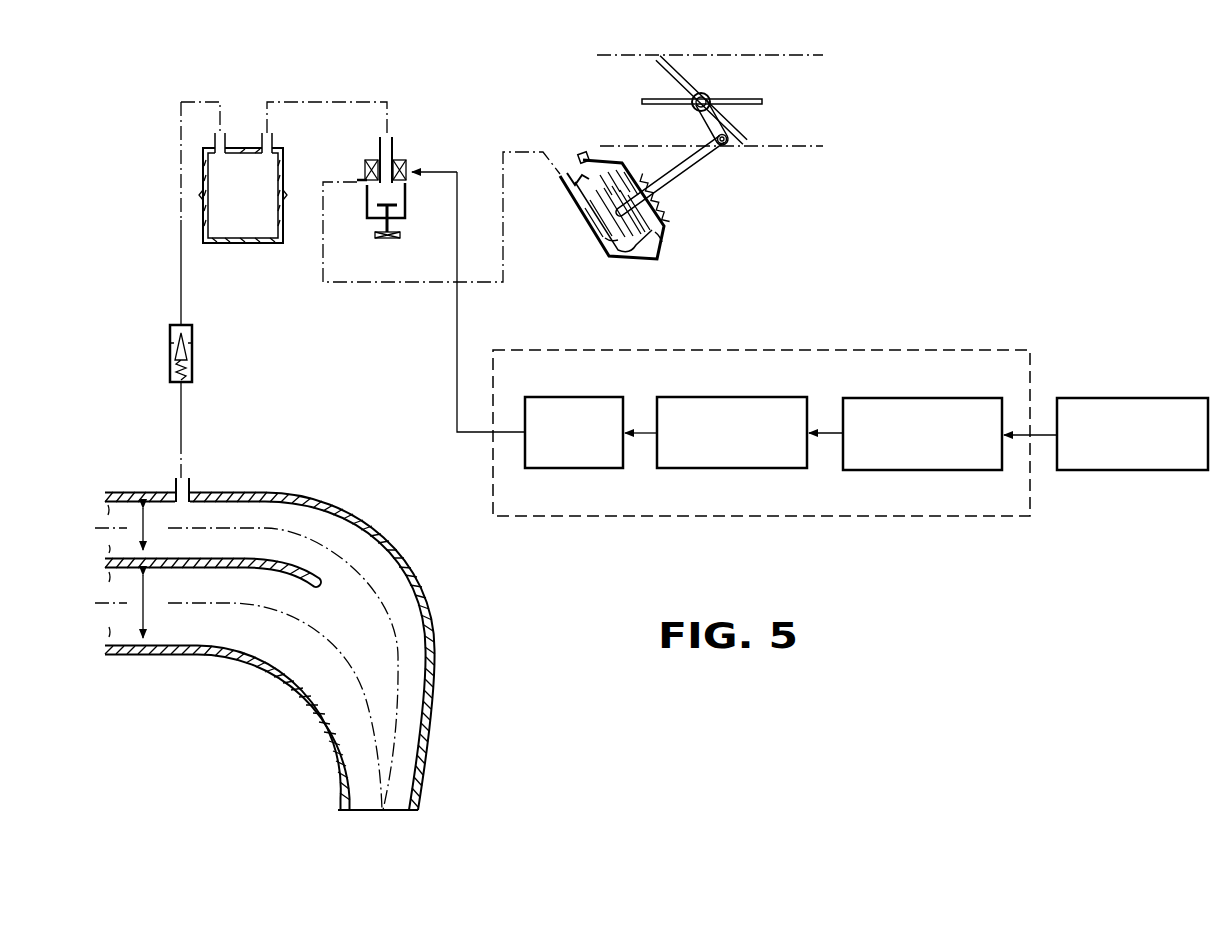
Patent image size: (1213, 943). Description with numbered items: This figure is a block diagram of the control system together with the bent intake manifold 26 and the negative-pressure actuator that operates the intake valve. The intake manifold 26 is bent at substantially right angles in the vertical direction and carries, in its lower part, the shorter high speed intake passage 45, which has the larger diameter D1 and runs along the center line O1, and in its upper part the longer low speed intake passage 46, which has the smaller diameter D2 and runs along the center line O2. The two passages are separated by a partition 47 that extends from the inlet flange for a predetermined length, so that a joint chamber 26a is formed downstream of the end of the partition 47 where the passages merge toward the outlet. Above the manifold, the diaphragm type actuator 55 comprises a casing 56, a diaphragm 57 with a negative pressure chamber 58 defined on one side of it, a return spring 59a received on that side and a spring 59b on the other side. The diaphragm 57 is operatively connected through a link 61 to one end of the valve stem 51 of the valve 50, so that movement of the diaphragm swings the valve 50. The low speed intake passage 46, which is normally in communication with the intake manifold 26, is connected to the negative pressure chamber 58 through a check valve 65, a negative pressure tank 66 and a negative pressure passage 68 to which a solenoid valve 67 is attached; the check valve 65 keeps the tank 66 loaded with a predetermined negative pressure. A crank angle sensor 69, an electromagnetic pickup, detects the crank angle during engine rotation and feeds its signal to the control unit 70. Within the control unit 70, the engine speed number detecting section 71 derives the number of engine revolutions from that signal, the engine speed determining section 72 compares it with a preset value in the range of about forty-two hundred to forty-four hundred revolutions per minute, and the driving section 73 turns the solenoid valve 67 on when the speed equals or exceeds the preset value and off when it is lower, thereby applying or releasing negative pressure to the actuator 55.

The intake manifold 26 is at (235, 493).
The joint chamber 26a is at (387, 651).
The high speed intake passage 45 is at (243, 630).
The low speed intake passage 46 is at (310, 528).
The partition 47 is at (290, 570).
The valve 50 is at (757, 103).
The valve stem 51 is at (699, 108).
The diaphragm type actuator 55 is at (631, 207).
The casing 56 is at (590, 235).
The diaphragm 57 is at (597, 163).
The negative pressure chamber 58 is at (633, 248).
The return spring 59a is at (612, 245).
The spring 59b is at (693, 258).
The link 61 is at (700, 155).
The check valve 65 is at (192, 357).
The negative pressure tank 66 is at (245, 243).
The solenoid valve 67 is at (400, 163).
The negative pressure passage 68 is at (179, 220).
The crank angle sensor 69 is at (1138, 392).
The control unit 70 is at (778, 350).
The engine speed number detecting section 71 is at (917, 398).
The engine speed determining section 72 is at (733, 397).
The driving section 73 is at (575, 397).
The center line of high speed intake passage O1 is at (368, 703).
The center line of low speed intake passage O2 is at (365, 577).
The diameter of high speed intake passage D1 is at (148, 606).
The diameter of low speed intake passage D2 is at (148, 529).